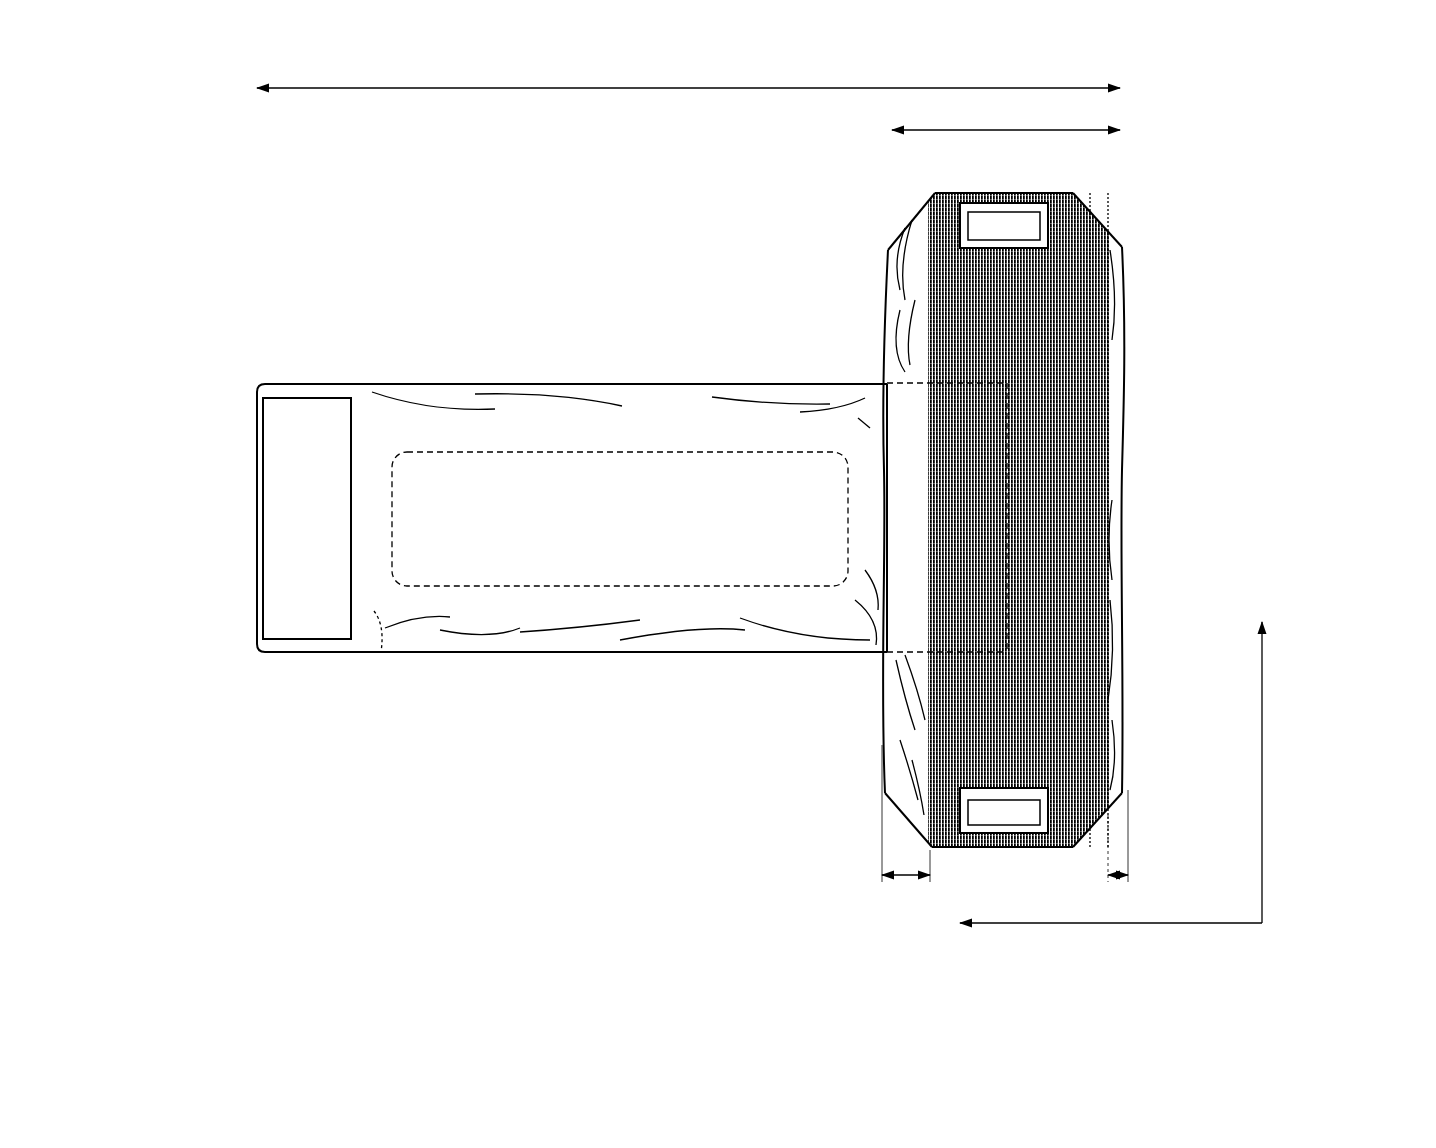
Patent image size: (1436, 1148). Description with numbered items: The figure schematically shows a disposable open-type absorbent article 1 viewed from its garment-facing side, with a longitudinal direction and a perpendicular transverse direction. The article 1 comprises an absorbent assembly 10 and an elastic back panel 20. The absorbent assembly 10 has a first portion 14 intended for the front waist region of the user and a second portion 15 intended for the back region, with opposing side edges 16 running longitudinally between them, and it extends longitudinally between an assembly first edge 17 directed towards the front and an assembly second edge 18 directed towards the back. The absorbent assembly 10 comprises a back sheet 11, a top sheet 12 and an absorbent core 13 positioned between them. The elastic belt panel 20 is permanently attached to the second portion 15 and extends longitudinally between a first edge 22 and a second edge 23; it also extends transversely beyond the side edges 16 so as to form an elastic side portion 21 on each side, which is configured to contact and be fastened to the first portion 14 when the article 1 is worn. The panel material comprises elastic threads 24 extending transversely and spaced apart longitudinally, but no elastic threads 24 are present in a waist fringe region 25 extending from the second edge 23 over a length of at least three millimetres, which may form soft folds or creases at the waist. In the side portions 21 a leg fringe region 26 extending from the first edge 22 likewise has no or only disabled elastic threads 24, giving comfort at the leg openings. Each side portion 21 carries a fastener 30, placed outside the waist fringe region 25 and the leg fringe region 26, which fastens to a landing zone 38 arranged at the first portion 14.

The disposable open-type absorbent article 1 is at (368, 236).
The absorbent assembly 10 is at (233, 341).
The back sheet 11 is at (505, 612).
The top sheet 12 is at (380, 653).
The absorbent core 13 is at (680, 587).
The first portion 14 is at (368, 522).
The second portion 15 is at (955, 485).
The side edges 16 is at (650, 385).
The assembly first edge 17 is at (255, 562).
The assembly second edge 18 is at (1008, 543).
The elastic back panel 20 is at (846, 209).
The elastic side portion 21 is at (956, 273).
The first edge 22 is at (905, 752).
The second edge 23 is at (1121, 512).
The elastic threads 24 is at (1090, 421).
The waist fringe region 25 is at (1117, 592).
The leg fringe region 26 is at (905, 310).
The fastener 30 is at (1011, 212).
The landing zone 38 is at (293, 641).